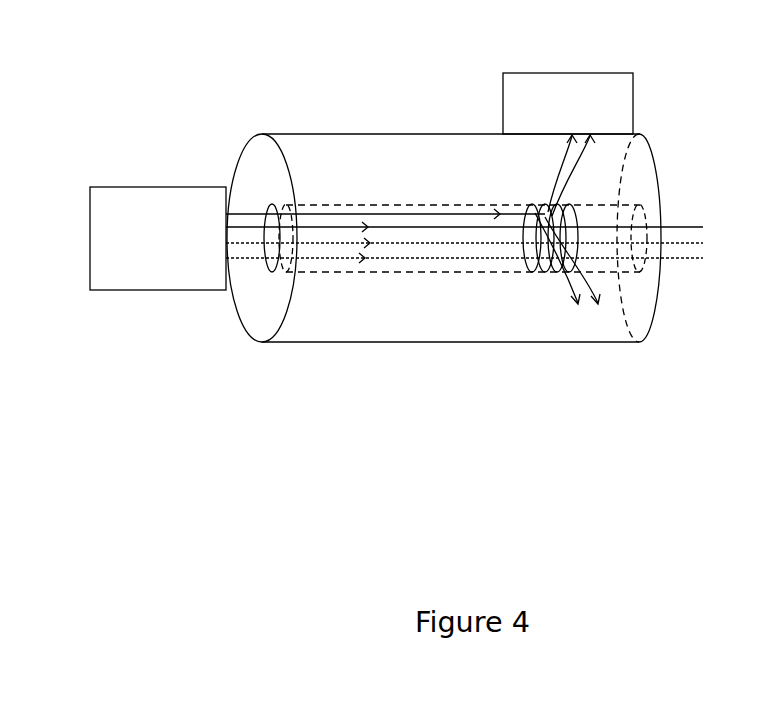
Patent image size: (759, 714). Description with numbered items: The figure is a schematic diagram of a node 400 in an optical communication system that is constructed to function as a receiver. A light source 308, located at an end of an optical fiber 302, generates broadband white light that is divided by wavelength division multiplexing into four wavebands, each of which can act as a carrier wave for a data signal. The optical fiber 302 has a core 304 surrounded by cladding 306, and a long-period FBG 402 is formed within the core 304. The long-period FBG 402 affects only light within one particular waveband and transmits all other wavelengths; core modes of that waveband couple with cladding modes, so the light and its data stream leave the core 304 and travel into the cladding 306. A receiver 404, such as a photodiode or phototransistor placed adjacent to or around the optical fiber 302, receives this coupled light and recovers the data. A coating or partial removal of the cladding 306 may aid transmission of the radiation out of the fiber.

The optical fiber 302 is at (572, 343).
The core 304 is at (348, 208).
The cladding 306 is at (608, 161).
The light source 308 is at (100, 190).
The node 400 is at (245, 392).
The long-period FBG 402 is at (537, 273).
The receiver 404 is at (530, 73).